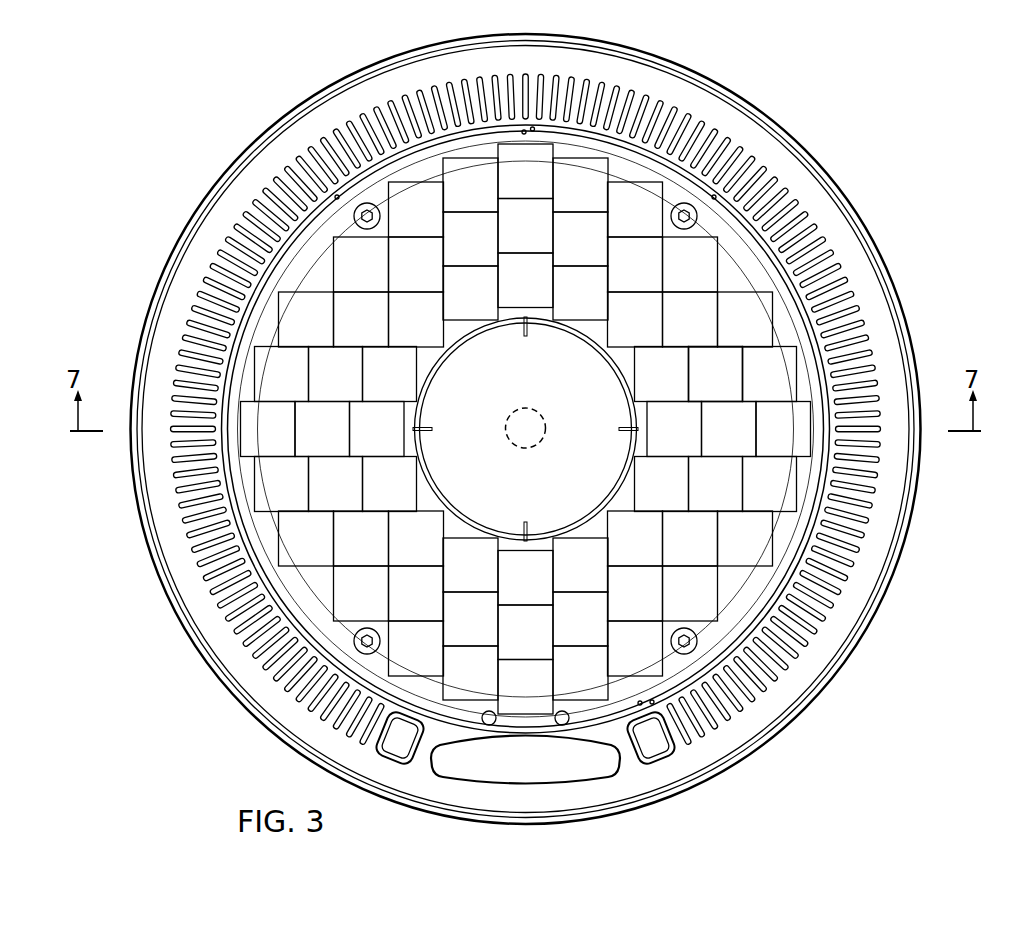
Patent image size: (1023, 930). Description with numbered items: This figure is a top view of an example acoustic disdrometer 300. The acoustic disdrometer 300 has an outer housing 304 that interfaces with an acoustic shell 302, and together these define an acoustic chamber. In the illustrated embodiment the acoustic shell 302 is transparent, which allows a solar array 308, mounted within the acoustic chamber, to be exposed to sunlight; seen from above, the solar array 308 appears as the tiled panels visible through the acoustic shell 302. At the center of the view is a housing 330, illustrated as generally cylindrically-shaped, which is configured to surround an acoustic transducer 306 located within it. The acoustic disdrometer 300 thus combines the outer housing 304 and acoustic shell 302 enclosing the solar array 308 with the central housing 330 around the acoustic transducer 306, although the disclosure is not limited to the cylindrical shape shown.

The acoustic disdrometer 300 is at (190, 90).
The acoustic shell 302 is at (578, 182).
The housing 304 is at (375, 92).
The acoustic transducer 306 is at (528, 448).
The solar array 308 is at (723, 367).
The housing 330 is at (585, 340).